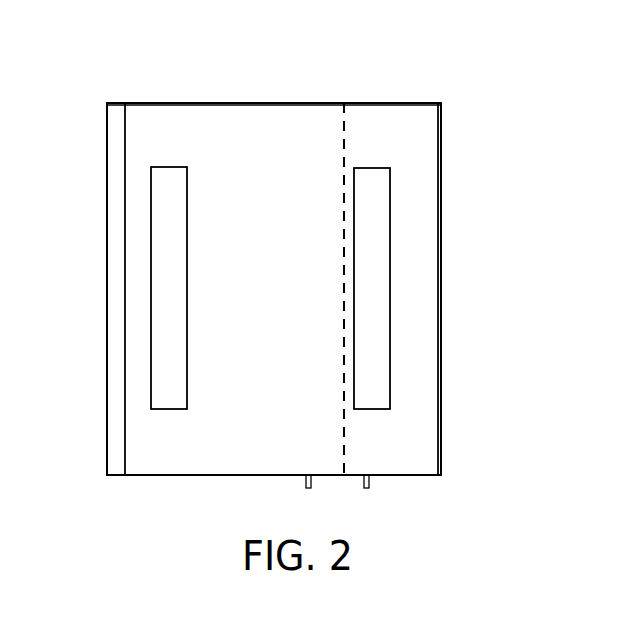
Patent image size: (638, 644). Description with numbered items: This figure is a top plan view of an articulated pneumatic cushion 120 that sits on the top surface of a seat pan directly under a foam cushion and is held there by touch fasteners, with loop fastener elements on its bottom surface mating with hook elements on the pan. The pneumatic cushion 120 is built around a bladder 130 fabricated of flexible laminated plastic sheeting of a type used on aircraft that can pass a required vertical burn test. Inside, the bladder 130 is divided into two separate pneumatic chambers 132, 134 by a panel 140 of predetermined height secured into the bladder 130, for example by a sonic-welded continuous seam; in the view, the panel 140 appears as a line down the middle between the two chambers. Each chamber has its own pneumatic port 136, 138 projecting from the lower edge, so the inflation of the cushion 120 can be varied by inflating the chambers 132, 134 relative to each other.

The pneumatic cushion 120 is at (280, 70).
The bladder 130 is at (399, 103).
The panel 140 is at (344, 123).
The pneumatic chamber 134 is at (156, 439).
The pneumatic chamber 132 is at (393, 433).
The pneumatic port 138 is at (306, 482).
The pneumatic port 136 is at (369, 482).